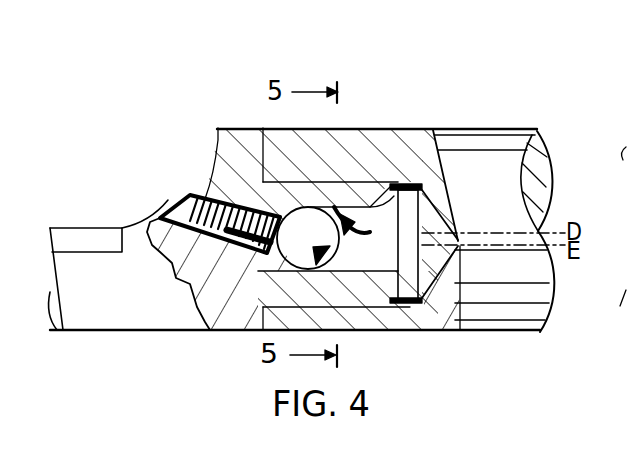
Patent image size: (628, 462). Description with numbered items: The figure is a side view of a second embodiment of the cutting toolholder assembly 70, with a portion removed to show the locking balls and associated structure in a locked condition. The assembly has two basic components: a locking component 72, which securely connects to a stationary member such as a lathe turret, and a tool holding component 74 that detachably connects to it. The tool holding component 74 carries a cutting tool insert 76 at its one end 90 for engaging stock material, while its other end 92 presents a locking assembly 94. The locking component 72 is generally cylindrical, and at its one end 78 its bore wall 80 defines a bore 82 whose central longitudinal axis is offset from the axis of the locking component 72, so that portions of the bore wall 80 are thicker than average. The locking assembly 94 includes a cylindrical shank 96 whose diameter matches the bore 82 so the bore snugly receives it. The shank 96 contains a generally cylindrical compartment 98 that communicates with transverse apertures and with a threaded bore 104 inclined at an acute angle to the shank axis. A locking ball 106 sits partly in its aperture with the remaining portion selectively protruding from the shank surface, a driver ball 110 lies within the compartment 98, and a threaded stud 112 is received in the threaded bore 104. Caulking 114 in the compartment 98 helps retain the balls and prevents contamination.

The cutting toolholder assembly 70 is at (142, 94).
The locking component 72 is at (485, 130).
The tool holding component 74 is at (103, 320).
The cutting tool insert 76 is at (87, 228).
The one end 78 is at (262, 148).
The bore wall 80 is at (400, 329).
The bore 82 is at (431, 326).
The one end 90 is at (57, 331).
The other end 92 is at (437, 130).
The locking assembly 94 is at (188, 165).
The cylindrical shank 96 is at (357, 182).
The compartment 98 is at (370, 260).
The threaded bore 104 is at (166, 213).
The locking ball 106 is at (310, 181).
The driver ball 110 is at (300, 271).
The threaded stud 112 is at (178, 328).
The caulking 114 is at (388, 182).